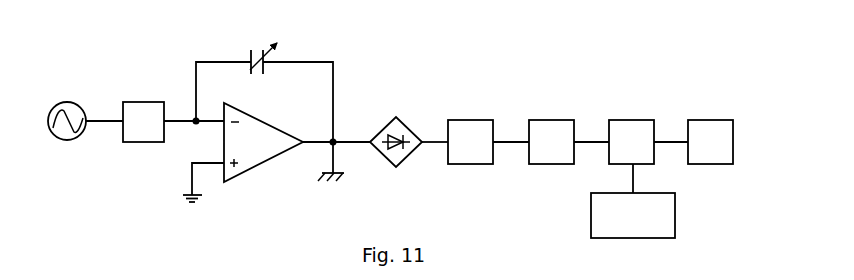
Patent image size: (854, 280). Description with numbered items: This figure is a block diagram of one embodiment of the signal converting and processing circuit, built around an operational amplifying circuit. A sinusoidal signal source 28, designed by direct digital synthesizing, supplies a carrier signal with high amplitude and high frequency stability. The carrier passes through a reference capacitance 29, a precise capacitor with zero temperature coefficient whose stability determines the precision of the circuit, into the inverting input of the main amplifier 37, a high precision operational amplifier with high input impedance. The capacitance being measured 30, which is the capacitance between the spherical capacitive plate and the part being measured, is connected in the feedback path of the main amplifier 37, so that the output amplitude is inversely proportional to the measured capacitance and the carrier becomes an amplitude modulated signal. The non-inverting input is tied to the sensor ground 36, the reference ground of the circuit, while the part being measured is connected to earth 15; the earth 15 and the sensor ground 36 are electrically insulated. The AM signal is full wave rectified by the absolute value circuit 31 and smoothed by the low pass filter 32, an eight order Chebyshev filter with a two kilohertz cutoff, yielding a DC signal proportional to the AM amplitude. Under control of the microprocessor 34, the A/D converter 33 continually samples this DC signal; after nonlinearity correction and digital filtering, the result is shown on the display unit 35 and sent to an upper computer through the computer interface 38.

The sinusoidal signal source 28 is at (71, 111).
The reference capacitance 29 is at (140, 110).
The capacitance being measured 30 is at (258, 50).
The absolute value circuit 31 is at (398, 123).
The low pass filter 32 is at (470, 125).
The A/D converter 33 is at (550, 125).
The microprocessor 34 is at (632, 125).
The display unit 35 is at (710, 125).
The sensor ground 36 is at (185, 193).
The main amplifier 37 is at (257, 152).
The earth 15 is at (342, 175).
The computer interface 38 is at (670, 230).